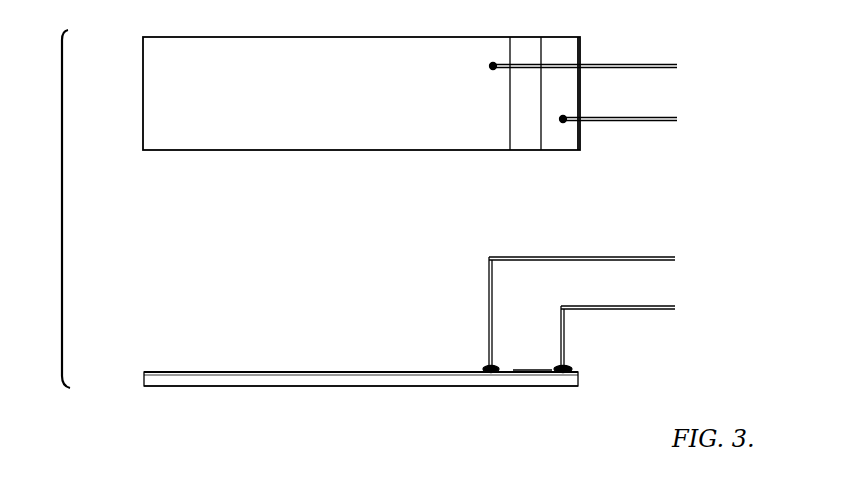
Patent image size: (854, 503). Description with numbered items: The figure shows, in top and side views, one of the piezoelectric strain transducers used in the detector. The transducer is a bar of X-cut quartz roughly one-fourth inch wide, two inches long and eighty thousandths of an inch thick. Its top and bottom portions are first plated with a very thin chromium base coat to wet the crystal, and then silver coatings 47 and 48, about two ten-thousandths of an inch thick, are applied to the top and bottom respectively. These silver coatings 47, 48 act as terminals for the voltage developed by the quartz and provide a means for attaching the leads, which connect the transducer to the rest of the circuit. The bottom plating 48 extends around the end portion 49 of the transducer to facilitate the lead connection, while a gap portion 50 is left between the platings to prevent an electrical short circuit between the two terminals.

The silver coating 47 is at (298, 353).
The silver coating 48 is at (288, 389).
The end portion 49 is at (580, 378).
The gap portion 50 is at (526, 370).